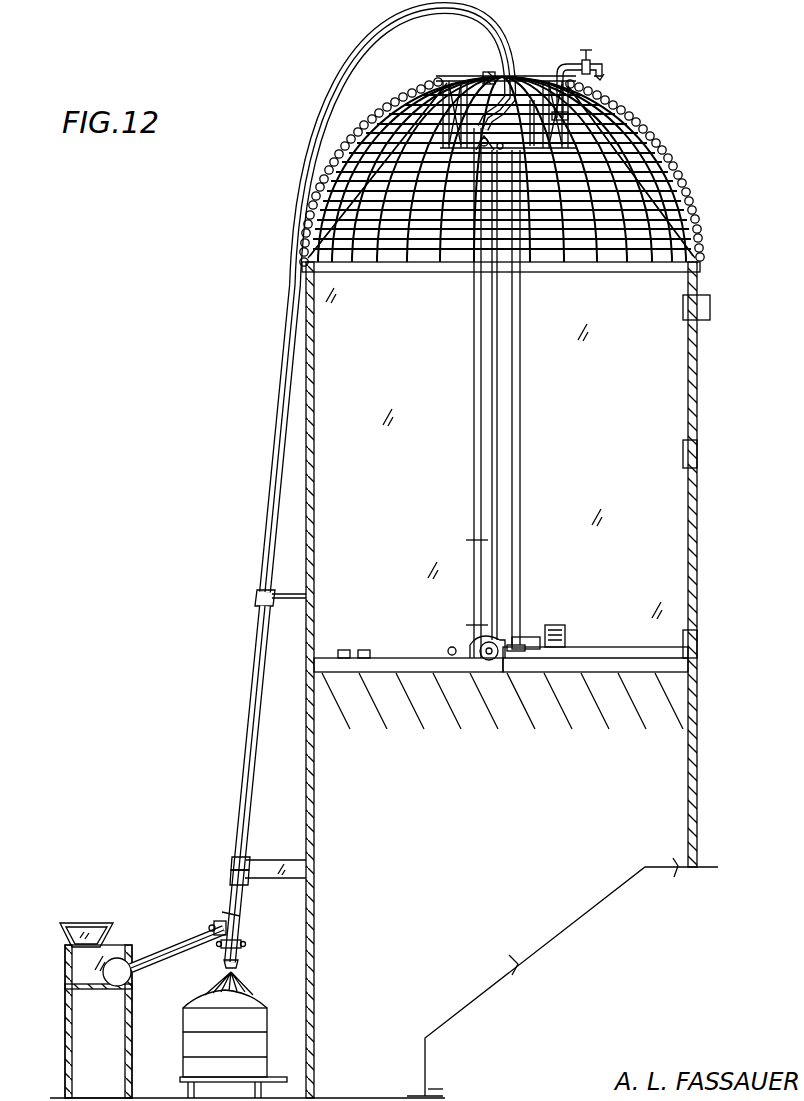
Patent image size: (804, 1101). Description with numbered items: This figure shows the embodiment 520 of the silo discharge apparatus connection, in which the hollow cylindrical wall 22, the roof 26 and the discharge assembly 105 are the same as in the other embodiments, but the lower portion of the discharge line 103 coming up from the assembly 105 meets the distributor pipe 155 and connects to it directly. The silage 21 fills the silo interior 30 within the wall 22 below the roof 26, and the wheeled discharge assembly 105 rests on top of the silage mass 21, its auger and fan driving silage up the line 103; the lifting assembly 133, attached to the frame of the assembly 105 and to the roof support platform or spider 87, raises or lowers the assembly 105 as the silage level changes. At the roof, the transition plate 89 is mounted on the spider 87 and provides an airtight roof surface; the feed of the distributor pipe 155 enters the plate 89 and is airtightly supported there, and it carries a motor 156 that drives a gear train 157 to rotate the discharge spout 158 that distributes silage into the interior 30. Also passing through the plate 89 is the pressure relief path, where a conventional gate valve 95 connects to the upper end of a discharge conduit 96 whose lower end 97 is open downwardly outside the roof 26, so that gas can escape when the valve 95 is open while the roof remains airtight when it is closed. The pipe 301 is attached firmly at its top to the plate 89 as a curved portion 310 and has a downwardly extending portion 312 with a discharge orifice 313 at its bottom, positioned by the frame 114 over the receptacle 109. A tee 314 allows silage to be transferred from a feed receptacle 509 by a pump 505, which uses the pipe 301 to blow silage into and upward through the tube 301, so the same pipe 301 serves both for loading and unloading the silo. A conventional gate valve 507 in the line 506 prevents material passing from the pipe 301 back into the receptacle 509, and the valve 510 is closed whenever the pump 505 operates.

The distributor pipe 155 is at (338, 69).
The curved portion 310 is at (410, 12).
The gear train 157 is at (492, 82).
The motor 156 is at (455, 73).
The discharge spout 158 is at (537, 77).
The transition plate 89 is at (548, 60).
The gate valve 95 is at (583, 52).
The discharge conduit 96 is at (592, 60).
The lower end of conduit 97 is at (600, 72).
The spider 87 is at (567, 98).
The roof 26 is at (655, 140).
The embodiment 520 is at (288, 249).
The lifting assembly 133 is at (518, 308).
The silo interior 30 is at (400, 395).
The pipe 301 is at (268, 490).
The discharge line 103 is at (472, 523).
The cylindrical wall 22 is at (700, 540).
The discharge assembly 105 is at (428, 654).
The downwardly extending portion 312 is at (260, 656).
The silage 21 is at (485, 768).
The frame 114 is at (294, 842).
The feed receptacle 509 is at (104, 920).
The line 506 is at (177, 947).
The pump 505 is at (113, 958).
The gate valve 507 is at (214, 910).
The tee 314 is at (238, 917).
The valve 510 is at (244, 940).
The discharge orifice 313 is at (238, 958).
The receptacle 109 is at (198, 1050).